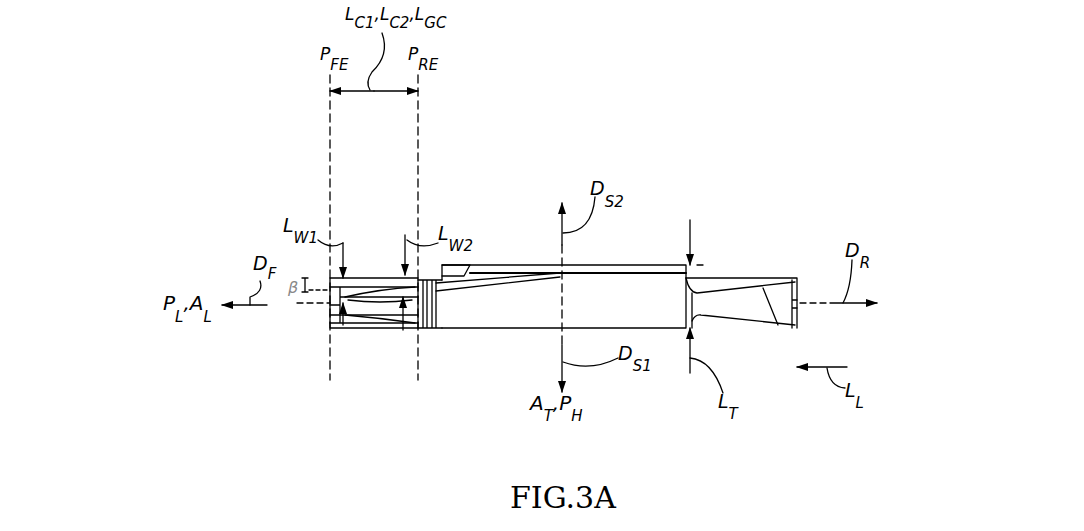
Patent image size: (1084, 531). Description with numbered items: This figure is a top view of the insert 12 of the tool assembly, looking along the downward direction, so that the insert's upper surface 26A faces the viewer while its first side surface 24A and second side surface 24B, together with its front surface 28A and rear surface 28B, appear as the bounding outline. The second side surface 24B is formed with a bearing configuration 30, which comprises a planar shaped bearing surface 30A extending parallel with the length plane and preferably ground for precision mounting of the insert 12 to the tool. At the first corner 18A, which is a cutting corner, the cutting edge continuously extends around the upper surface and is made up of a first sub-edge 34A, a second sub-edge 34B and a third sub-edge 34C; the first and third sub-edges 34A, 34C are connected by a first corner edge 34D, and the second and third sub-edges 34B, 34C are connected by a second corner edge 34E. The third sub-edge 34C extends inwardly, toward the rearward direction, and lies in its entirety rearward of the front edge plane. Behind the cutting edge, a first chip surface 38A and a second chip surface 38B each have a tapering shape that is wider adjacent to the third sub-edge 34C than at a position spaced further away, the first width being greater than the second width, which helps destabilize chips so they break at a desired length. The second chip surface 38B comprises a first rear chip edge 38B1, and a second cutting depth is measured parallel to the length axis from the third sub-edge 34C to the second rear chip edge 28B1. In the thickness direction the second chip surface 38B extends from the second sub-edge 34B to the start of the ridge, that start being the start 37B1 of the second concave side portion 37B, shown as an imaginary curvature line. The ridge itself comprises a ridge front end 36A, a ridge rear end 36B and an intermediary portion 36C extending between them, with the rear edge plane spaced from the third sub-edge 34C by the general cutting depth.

The insert 12 is at (723, 117).
The first corner 18A is at (334, 220).
The first side surface 24A is at (500, 329).
The second side surface 24B is at (483, 265).
The upper surface 26A is at (486, 300).
The front surface 28A is at (278, 318).
The rear surface 28B is at (818, 322).
The second rear chip edge 28B1 is at (740, 300).
The bearing configuration 30 is at (635, 262).
The planar shaped bearing surface 30A is at (663, 265).
The first sub-edge 34A is at (403, 332).
The second sub-edge 34B is at (353, 292).
The third sub-edge 34C is at (322, 315).
The first corner edge 34D is at (328, 330).
The second corner edge 34E is at (330, 278).
The ridge front end 36A is at (363, 323).
The ridge rear end 36B is at (400, 310).
The intermediary portion 36C is at (383, 312).
The second concave side portion 37B is at (371, 295).
The start of the second concave side portion 37B1 is at (383, 296).
The first chip surface 38A is at (356, 330).
The second chip surface 38B is at (392, 300).
The first rear chip edge 38B1 is at (440, 296).